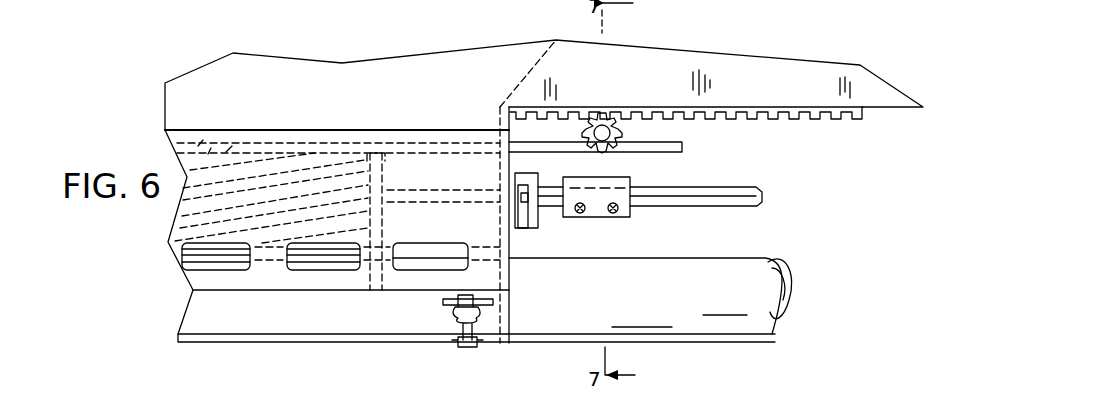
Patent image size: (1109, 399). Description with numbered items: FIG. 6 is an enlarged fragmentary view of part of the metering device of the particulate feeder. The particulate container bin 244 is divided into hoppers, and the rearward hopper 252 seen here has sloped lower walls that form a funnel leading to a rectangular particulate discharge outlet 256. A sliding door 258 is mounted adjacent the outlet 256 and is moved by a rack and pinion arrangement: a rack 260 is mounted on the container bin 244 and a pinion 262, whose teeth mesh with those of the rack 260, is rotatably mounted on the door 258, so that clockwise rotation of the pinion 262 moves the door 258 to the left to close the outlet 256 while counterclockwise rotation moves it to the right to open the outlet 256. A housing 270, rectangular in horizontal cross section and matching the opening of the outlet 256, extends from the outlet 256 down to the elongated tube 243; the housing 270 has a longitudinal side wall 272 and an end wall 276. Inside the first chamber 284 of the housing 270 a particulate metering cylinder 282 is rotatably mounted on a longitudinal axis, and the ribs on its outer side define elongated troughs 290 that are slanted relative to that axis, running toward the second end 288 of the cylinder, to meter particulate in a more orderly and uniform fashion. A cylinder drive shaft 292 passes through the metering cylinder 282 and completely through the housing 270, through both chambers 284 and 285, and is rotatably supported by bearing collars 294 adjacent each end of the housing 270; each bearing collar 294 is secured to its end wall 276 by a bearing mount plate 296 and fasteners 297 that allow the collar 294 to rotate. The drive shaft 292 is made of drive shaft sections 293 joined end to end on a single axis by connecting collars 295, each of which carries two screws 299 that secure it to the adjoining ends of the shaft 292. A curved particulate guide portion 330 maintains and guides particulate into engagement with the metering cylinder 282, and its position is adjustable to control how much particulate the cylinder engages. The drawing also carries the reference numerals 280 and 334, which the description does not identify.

The elongated tube 243 is at (298, 268).
The particulate container bin 244 is at (893, 110).
The rearward hopper 252 is at (482, 72).
The particulate discharge outlet 256 is at (381, 116).
The sliding door 258 is at (683, 147).
The rack 260 is at (800, 120).
The pinion 262 is at (623, 135).
The housing 270 is at (512, 240).
The longitudinal side wall 272 is at (510, 277).
The end wall 276 is at (512, 253).
The guide member 280 is at (390, 297).
The particulate metering cylinder 282 is at (274, 163).
The first chamber 284 is at (222, 280).
The chamber 285 is at (490, 155).
The second end 288 is at (417, 152).
The elongated troughs 290 is at (240, 165).
The cylinder drive shaft 292 is at (407, 186).
The drive shaft sections 293 is at (447, 207).
The bearing collars 294 is at (542, 181).
The connecting collars 295 is at (630, 180).
The bearing mount plate 296 is at (509, 210).
The fasteners 297 is at (522, 226).
The screws 299 is at (582, 213).
The curved particulate guide portion 330 is at (340, 252).
The slots 334 is at (322, 270).